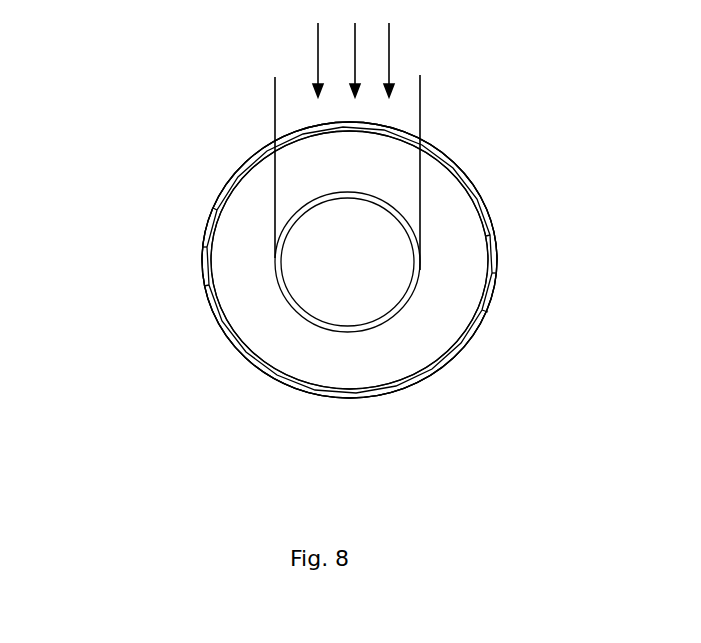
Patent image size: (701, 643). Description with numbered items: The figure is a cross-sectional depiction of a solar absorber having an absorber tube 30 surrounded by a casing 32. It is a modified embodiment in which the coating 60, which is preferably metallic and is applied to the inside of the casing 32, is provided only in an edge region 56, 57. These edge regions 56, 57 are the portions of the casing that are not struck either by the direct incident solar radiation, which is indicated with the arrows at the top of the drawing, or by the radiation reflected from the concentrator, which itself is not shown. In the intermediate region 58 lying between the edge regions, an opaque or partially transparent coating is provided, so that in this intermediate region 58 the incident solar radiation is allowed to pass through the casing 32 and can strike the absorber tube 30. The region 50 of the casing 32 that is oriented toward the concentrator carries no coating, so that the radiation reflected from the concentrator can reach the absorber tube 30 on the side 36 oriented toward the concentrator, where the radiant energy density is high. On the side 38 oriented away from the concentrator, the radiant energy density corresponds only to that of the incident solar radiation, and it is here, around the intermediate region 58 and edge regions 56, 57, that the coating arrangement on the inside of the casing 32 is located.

The absorber tube 30 is at (273, 308).
The casing 32 is at (507, 292).
The side oriented toward the concentrator 36 is at (404, 409).
The side oriented away from the concentrator 38 is at (461, 131).
The region of the casing oriented toward the concentrator 50 is at (468, 370).
The edge region 56 is at (192, 251).
The edge region 57 is at (500, 225).
The intermediate region 58 is at (410, 114).
The coating 60 is at (475, 182).